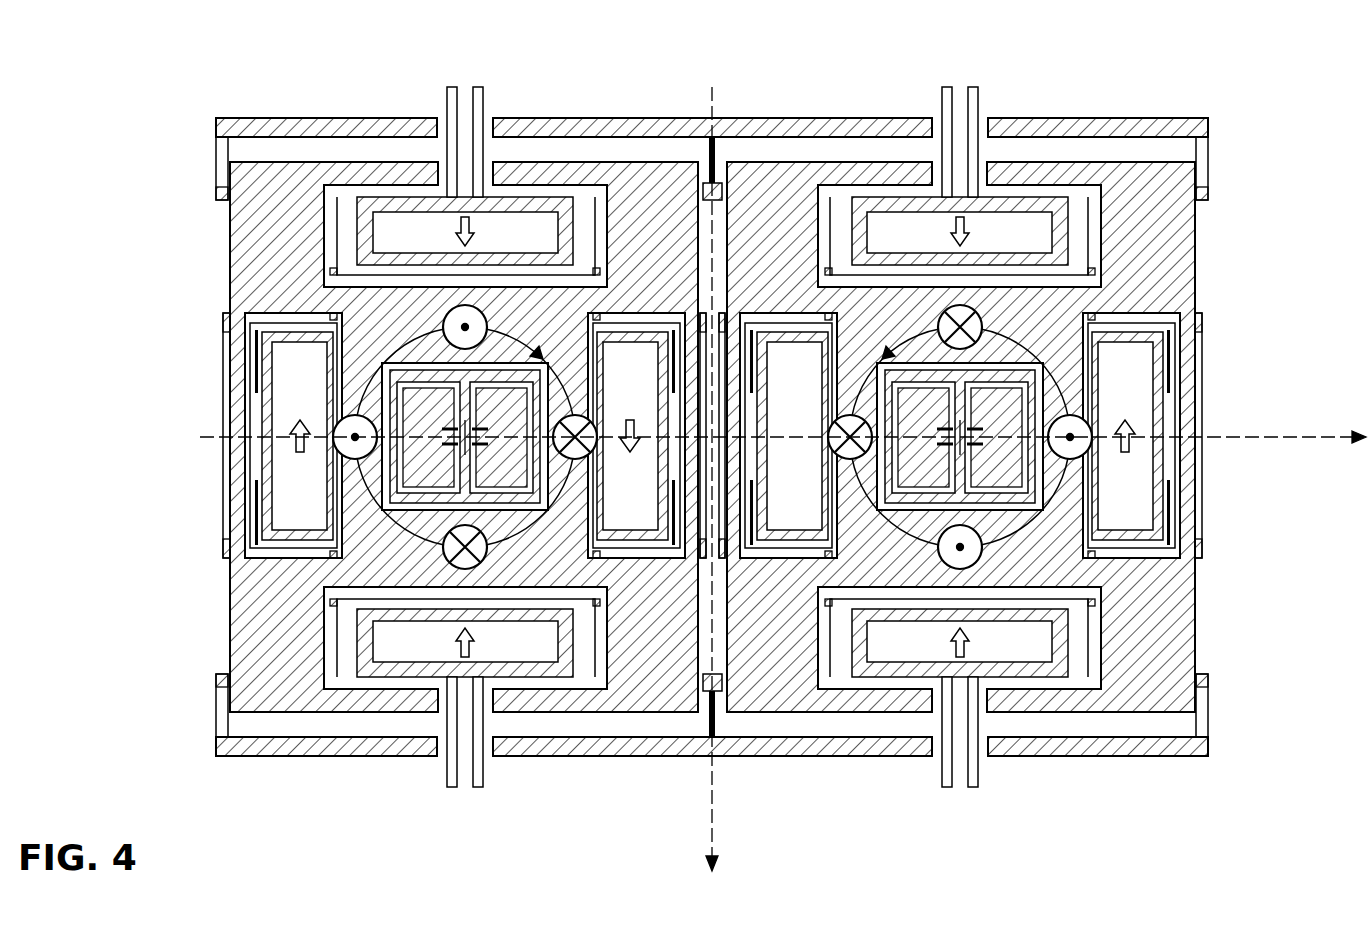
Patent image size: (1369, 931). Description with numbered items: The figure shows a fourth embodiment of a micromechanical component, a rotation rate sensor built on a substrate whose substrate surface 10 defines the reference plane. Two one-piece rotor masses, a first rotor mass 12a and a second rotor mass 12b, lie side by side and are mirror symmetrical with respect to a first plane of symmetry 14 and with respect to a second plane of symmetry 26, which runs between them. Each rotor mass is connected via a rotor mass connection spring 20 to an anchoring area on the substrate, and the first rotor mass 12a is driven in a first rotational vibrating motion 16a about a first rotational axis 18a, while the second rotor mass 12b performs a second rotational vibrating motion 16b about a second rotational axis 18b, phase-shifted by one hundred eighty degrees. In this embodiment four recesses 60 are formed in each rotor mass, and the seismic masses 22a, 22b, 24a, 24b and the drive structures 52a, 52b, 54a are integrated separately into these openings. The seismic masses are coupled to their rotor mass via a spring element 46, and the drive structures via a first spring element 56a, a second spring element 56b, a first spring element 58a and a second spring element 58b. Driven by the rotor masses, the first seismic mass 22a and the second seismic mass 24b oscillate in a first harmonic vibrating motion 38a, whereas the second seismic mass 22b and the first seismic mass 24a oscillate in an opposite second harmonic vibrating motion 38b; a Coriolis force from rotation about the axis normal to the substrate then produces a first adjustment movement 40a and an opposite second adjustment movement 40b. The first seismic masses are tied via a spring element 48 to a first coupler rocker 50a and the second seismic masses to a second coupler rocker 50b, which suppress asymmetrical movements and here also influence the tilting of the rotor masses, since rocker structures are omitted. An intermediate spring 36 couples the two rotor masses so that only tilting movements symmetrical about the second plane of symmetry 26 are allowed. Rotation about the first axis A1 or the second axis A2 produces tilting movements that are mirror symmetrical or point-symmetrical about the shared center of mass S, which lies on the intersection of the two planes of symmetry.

The substrate surface 10 is at (1298, 277).
The first rotor mass 12a is at (242, 237).
The second rotor mass 12b is at (1167, 222).
The first plane of symmetry 14 is at (1242, 436).
The first rotational vibrating motion 16a is at (383, 356).
The second rotational vibrating motion 16b is at (1049, 360).
The first rotational axis 18a is at (447, 468).
The second rotational axis 18b is at (967, 457).
The rotor mass connection spring 20 is at (749, 444).
The first seismic mass of the first pair 22a is at (397, 197).
The second seismic mass of the first pair 22b is at (395, 668).
The first seismic mass of the second pair 24a is at (1030, 197).
The second seismic mass of the second pair 24b is at (1030, 668).
The second plane of symmetry 26 is at (708, 773).
The intermediate spring 36 is at (700, 517).
The first harmonic vibrating motion 38a is at (298, 418).
The second harmonic vibrating motion 38b is at (632, 418).
The first adjustment movement 40a is at (475, 232).
The second adjustment movement 40b is at (970, 232).
The spring element 46 is at (608, 212).
The spring element 48 is at (215, 150).
The first coupler rocker 50a is at (862, 118).
The second coupler rocker 50b is at (862, 757).
The first drive structure of the first pair 52a is at (268, 410).
The second drive structure of the first pair 52b is at (660, 537).
The first drive structure of the second pair 54a is at (828, 392).
The first spring element 56a is at (250, 350).
The second spring element 56b is at (676, 360).
The first spring element 58a is at (772, 548).
The second spring element 58b is at (1170, 500).
The recess 60 is at (953, 186).
The first axis A1 is at (1337, 436).
The second axis A2 is at (708, 835).
The center of mass S is at (670, 476).